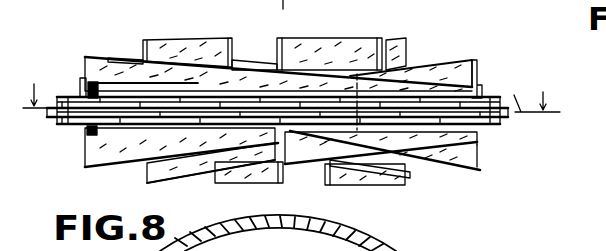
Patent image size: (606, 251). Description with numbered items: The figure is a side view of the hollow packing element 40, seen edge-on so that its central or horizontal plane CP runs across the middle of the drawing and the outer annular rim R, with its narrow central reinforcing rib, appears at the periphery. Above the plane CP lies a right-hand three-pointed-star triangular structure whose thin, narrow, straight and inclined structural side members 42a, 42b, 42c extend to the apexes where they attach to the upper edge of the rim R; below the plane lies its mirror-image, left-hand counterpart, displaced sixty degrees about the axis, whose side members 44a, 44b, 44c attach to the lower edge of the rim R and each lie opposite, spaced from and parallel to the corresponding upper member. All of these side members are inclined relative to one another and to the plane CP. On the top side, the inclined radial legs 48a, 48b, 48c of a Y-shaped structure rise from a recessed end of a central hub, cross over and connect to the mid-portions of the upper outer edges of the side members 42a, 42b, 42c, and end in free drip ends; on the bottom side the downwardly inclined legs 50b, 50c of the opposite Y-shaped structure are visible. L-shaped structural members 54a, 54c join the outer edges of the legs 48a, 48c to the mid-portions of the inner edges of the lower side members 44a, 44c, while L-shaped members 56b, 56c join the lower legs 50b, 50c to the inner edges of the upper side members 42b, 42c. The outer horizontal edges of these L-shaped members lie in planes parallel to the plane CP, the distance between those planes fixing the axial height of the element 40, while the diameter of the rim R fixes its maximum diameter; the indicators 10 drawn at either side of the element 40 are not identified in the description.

The damper assembly 10 is at (291, 86).
The packing element 40 is at (66, 136).
The structural side member 42a is at (475, 67).
The structural side member 42b is at (80, 78).
The structural side member 42c is at (120, 62).
The structural side member 44a is at (92, 150).
The structural side member 44b is at (477, 140).
The structural side member 44c is at (468, 160).
The inclined radial structural member 48a is at (275, 57).
The inclined radial structural member 48b is at (407, 45).
The inclined radial structural member 48c is at (143, 52).
The inclined radial structural member 50b is at (147, 178).
The inclined radial structural member 50c is at (400, 177).
The L-shaped structural member 54a is at (330, 45).
The L-shaped structural member 54c is at (190, 40).
The L-shaped structural member 56b is at (240, 183).
The L-shaped structural member 56c is at (380, 187).
The central plane CP is at (508, 83).
The outer annular rim R is at (505, 120).